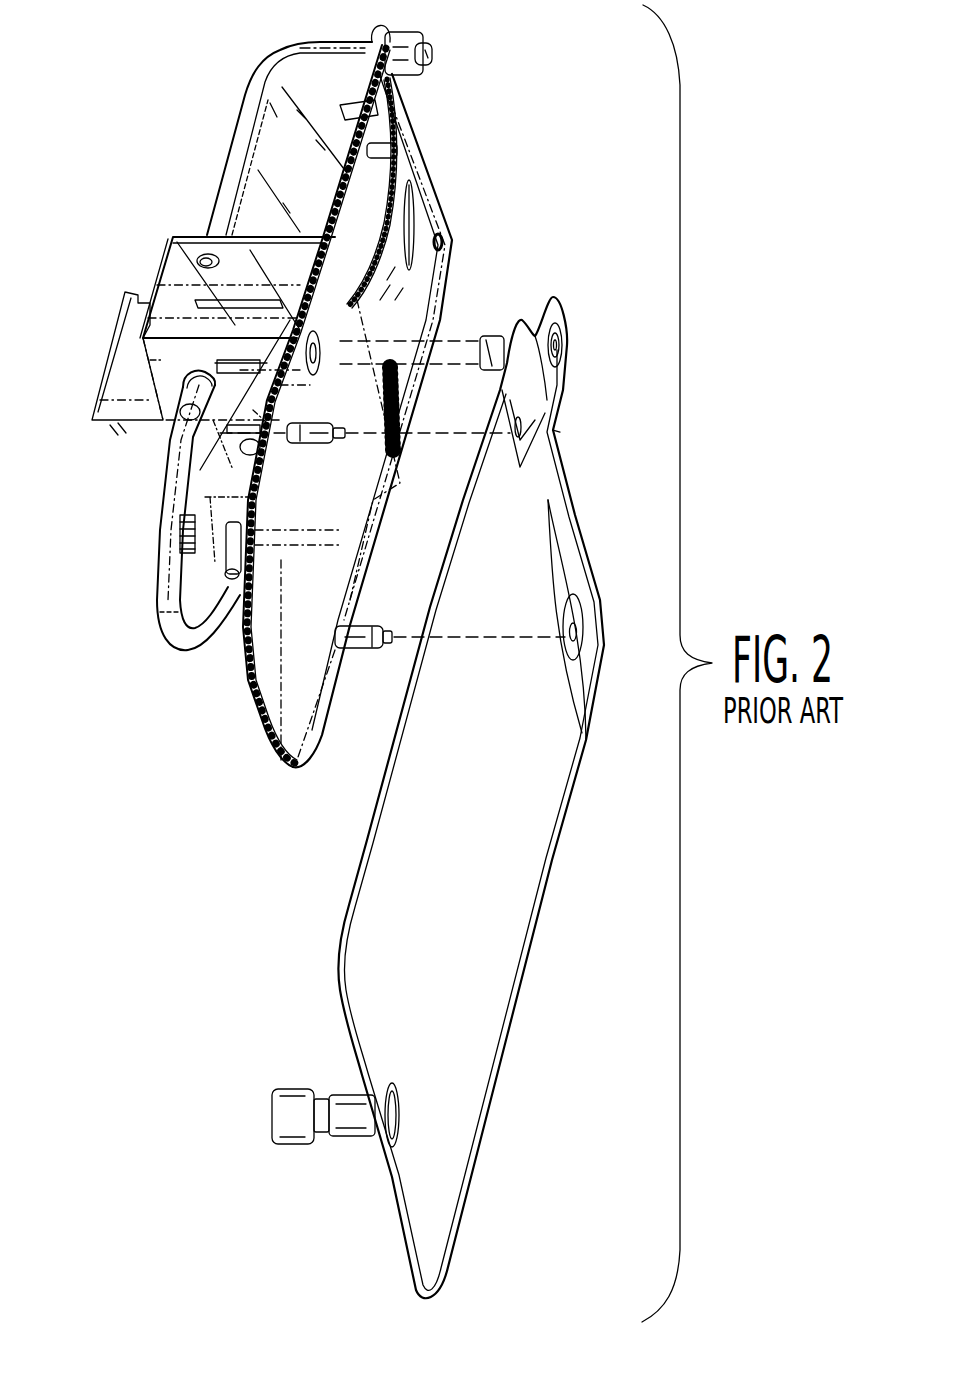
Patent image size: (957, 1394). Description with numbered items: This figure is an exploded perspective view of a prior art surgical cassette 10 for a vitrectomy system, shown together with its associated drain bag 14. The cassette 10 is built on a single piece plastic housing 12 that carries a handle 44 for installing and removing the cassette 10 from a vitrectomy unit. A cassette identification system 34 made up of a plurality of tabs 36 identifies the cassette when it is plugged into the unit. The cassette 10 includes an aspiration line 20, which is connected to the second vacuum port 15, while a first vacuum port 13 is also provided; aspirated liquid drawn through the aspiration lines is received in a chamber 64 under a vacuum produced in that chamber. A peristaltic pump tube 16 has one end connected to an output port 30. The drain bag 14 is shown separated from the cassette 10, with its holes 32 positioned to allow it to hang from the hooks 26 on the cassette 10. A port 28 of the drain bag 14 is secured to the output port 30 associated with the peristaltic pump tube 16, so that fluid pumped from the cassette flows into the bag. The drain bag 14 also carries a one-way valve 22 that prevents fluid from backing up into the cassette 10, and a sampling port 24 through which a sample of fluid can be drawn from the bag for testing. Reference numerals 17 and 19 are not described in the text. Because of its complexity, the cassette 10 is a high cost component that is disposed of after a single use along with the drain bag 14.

The cassette 10 is at (165, 125).
The housing 12 is at (108, 353).
The first vacuum port 13 is at (444, 240).
The drain bag 14 is at (332, 981).
The second vacuum port 15 is at (412, 30).
The peristaltic pump tube 16 is at (172, 633).
The clip 17 is at (257, 563).
The tube 19 is at (190, 397).
The aspiration line 20 is at (240, 160).
The one-way valve 22 is at (557, 428).
The sampling port 24 is at (265, 1120).
The hooks 26 is at (315, 447).
The port 28 is at (490, 334).
The output port 30 is at (315, 375).
The holes 32 is at (515, 427).
The cassette identification system 34 is at (207, 514).
The tabs 36 is at (195, 555).
The handle 44 is at (413, 307).
The chamber 64 is at (102, 470).